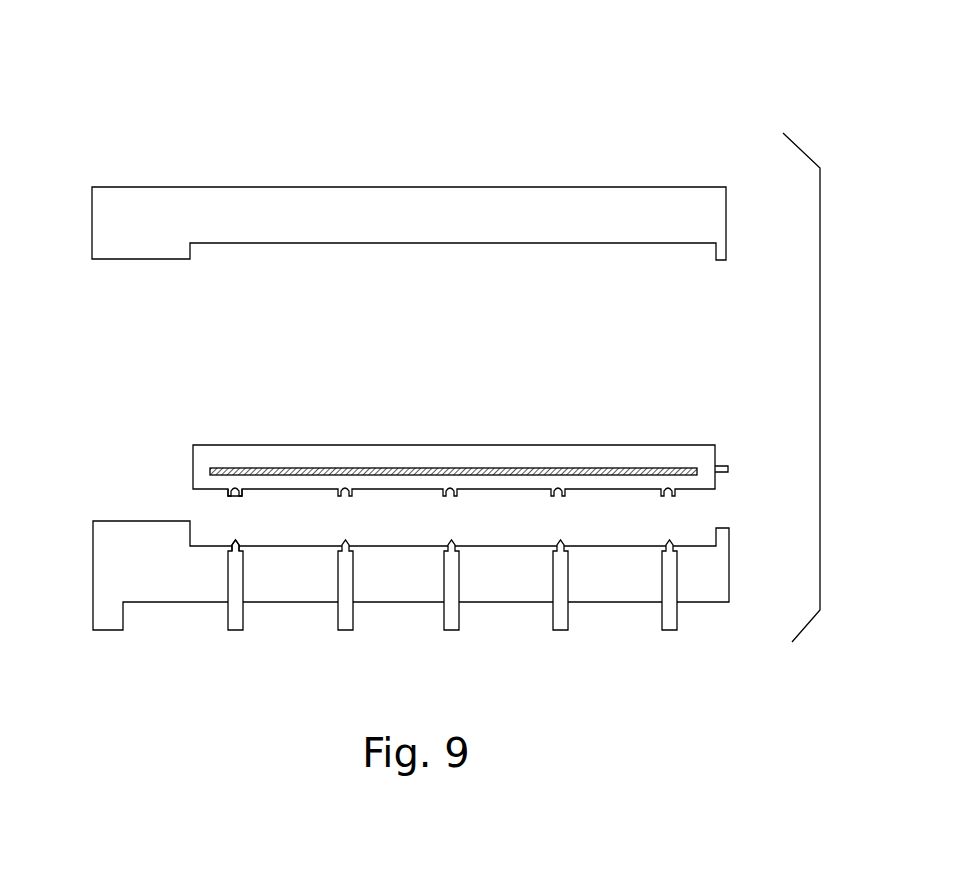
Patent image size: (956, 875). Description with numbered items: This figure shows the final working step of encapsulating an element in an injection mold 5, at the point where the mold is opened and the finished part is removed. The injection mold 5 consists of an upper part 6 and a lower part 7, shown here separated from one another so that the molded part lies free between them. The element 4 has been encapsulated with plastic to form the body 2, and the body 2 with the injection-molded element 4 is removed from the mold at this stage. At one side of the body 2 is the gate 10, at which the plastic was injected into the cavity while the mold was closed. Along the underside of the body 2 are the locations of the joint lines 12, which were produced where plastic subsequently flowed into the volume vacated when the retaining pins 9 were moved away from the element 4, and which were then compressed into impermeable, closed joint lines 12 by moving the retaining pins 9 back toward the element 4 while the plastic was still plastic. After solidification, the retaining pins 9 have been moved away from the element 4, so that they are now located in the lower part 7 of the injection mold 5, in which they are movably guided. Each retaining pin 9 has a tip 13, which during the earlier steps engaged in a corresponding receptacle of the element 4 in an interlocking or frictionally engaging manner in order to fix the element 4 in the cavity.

The injection mold 5 is at (444, 81).
The upper part 6 is at (285, 212).
The body 2 is at (547, 455).
The element 4 is at (477, 468).
The gate 10 is at (722, 462).
The joint line 12 is at (247, 492).
The lower part 7 is at (125, 563).
The retaining pin 9 is at (236, 621).
The tip 13 is at (235, 545).